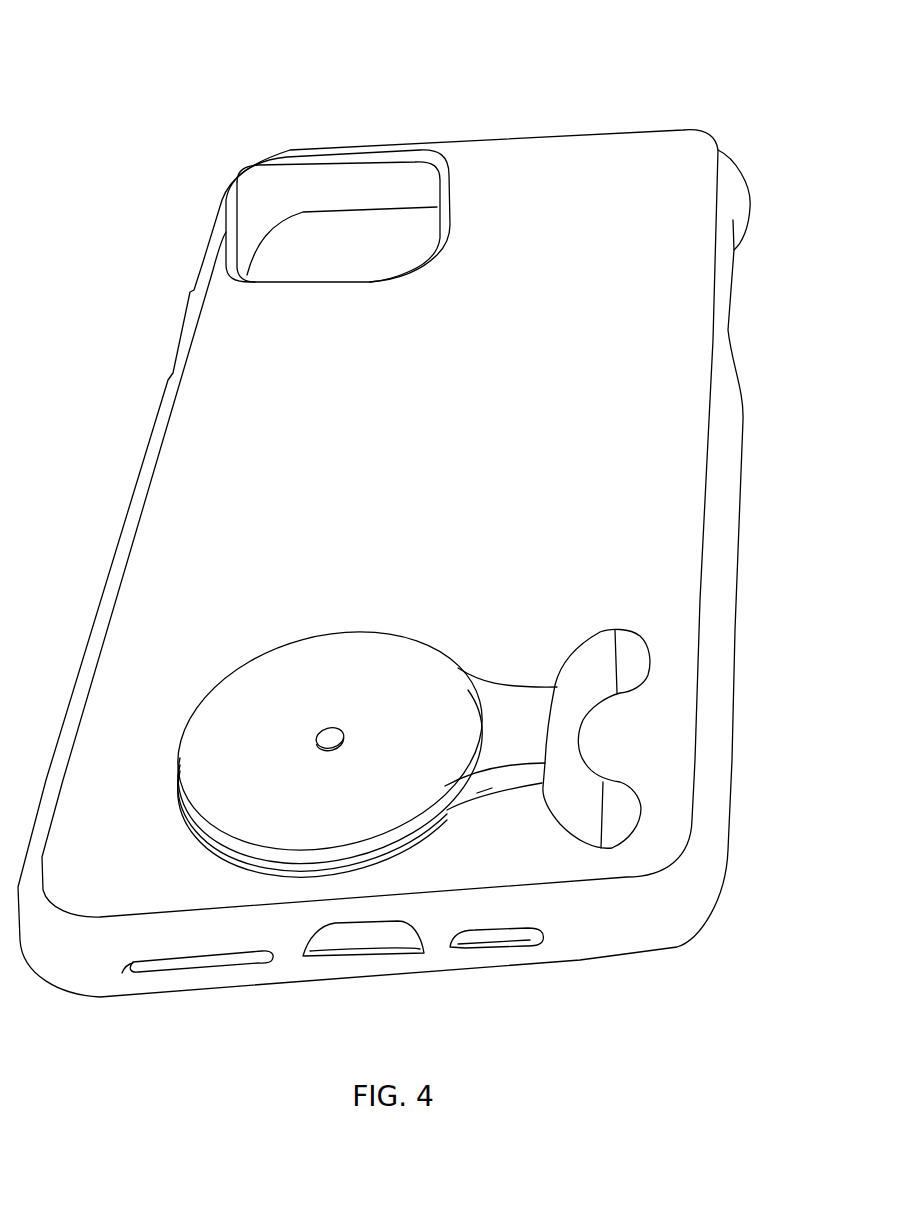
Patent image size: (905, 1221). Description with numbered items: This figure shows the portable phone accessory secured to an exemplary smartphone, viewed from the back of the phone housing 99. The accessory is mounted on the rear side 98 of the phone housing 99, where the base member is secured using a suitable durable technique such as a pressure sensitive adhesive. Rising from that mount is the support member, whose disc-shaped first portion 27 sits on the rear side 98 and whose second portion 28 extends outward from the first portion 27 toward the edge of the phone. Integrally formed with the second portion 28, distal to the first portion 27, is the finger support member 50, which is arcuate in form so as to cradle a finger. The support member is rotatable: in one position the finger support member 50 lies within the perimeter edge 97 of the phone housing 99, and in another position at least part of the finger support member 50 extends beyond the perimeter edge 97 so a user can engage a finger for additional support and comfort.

The first portion 27 is at (270, 823).
The second portion 28 is at (600, 547).
The finger support member 50 is at (640, 802).
The perimeter edge 97 is at (733, 837).
The rear side 98 is at (665, 420).
The phone housing 99 is at (722, 151).